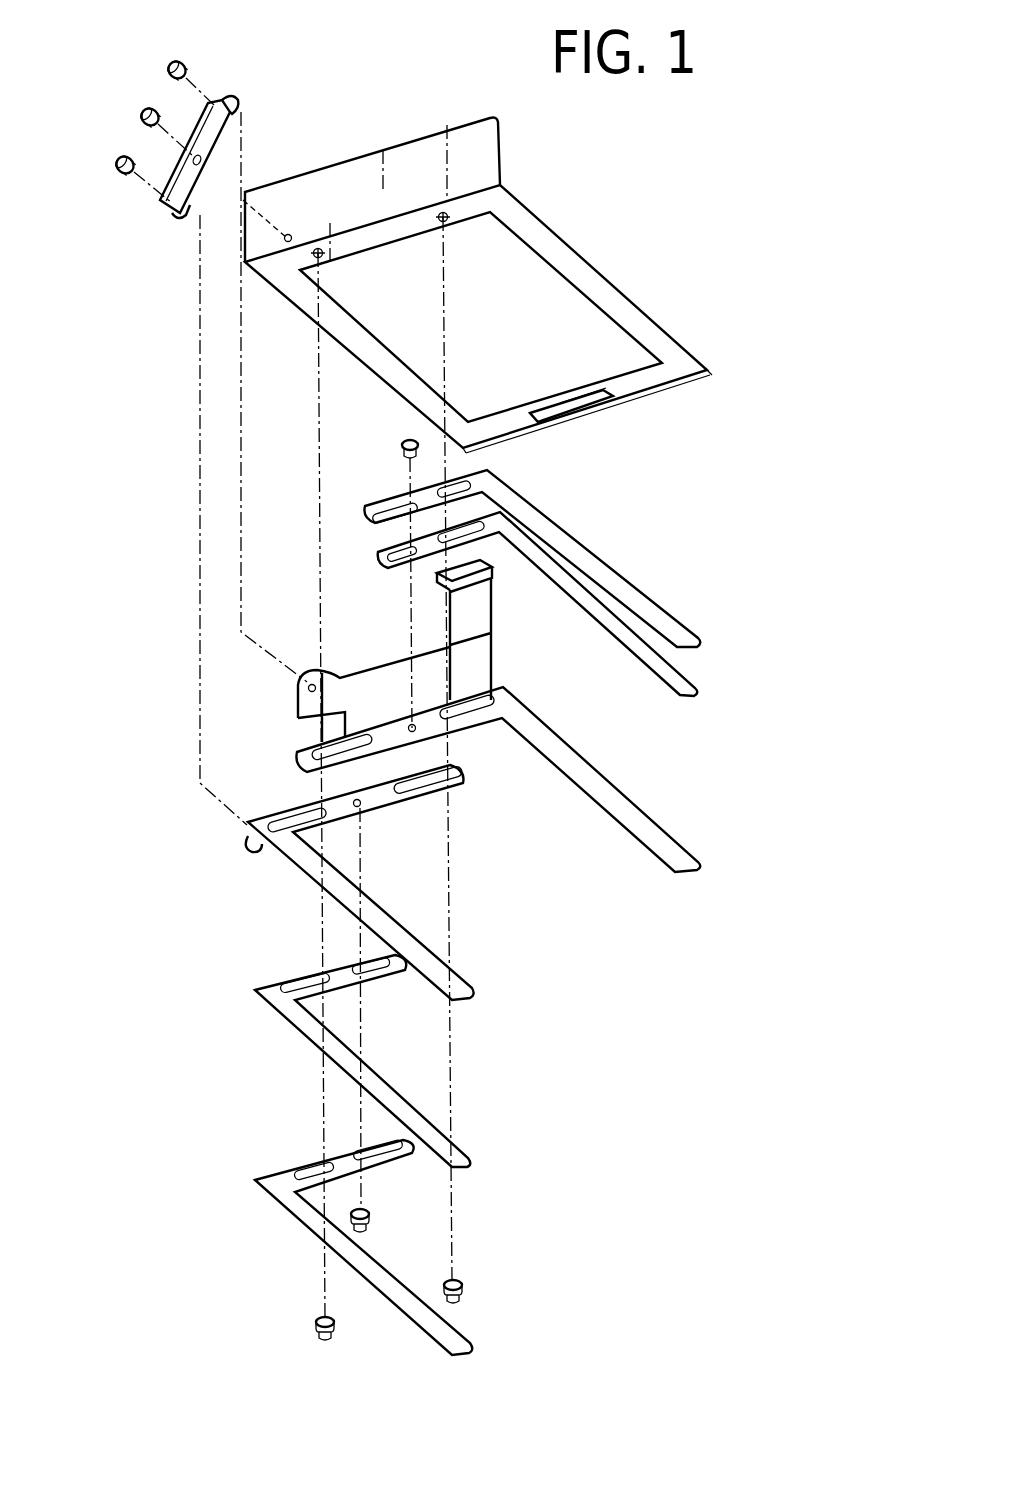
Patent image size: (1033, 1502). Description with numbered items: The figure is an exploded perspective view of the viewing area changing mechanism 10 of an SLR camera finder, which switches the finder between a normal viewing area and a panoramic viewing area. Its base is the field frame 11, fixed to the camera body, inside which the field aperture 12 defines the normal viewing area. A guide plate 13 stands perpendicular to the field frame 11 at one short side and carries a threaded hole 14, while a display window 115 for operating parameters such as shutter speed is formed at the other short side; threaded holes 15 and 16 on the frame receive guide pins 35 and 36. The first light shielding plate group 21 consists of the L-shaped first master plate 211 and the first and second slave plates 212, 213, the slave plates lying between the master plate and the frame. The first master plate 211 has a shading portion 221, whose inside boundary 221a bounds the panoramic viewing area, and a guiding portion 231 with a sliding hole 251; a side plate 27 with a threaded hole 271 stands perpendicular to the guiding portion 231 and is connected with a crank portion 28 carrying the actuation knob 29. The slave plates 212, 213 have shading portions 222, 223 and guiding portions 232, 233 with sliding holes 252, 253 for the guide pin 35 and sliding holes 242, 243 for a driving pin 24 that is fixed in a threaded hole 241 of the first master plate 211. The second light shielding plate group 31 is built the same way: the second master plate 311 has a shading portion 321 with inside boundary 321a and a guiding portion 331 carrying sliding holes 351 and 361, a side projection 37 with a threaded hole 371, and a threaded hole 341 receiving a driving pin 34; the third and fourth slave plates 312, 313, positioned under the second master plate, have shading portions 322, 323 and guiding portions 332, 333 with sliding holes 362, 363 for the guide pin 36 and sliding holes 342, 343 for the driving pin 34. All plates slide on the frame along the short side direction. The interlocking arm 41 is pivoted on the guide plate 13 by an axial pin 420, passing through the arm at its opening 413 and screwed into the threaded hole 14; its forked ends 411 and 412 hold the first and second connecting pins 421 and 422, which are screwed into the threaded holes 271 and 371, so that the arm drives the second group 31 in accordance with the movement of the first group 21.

The viewing area changing mechanism 10 is at (478, 267).
The field frame 11 is at (605, 282).
The field aperture 12 is at (618, 345).
The guide plate 13 is at (450, 143).
The threaded hole 14 is at (292, 235).
The threaded hole 15 is at (448, 222).
The threaded hole 16 is at (325, 257).
The display window 115 is at (590, 408).
The first light shielding plate group 21 is at (525, 674).
The first master plate 211 is at (493, 774).
The first slave plate 212 is at (548, 635).
The second slave plate 213 is at (545, 549).
The shading portion 221 is at (498, 792).
The inside boundary 221a is at (628, 858).
The shading portion 222 is at (700, 690).
The shading portion 223 is at (643, 593).
The guiding portion 231 is at (498, 774).
The guiding portion 232 is at (555, 604).
The guiding portion 233 is at (519, 555).
The threaded hole 241 is at (420, 733).
The sliding hole 242 is at (402, 558).
The sliding hole 243 is at (393, 514).
The sliding hole 251 is at (525, 707).
The sliding hole 252 is at (496, 530).
The sliding hole 253 is at (508, 486).
The driving pin 24 is at (403, 443).
The side plate 27 is at (332, 690).
The threaded hole 271 is at (305, 688).
The crank portion 28 is at (492, 630).
The actuation knob 29 is at (495, 568).
The second light shielding plate group 31 is at (388, 1071).
The second master plate 311 is at (356, 925).
The third slave plate 312 is at (384, 1078).
The fourth slave plate 313 is at (396, 1253).
The shading portion 321 is at (393, 882).
The inside boundary 321a is at (470, 985).
The shading portion 322 is at (300, 1034).
The shading portion 323 is at (402, 1326).
The guiding portion 331 is at (393, 882).
The guiding portion 332 is at (346, 1061).
The guiding portion 333 is at (363, 1259).
The threaded hole 341 is at (362, 808).
The sliding hole 342 is at (372, 968).
The sliding hole 343 is at (378, 1158).
The sliding hole 351 is at (450, 792).
The sliding hole 361 is at (302, 808).
The sliding hole 362 is at (305, 978).
The sliding hole 363 is at (312, 1164).
The driving pin 34 is at (365, 1232).
The guide pin 35 is at (462, 1286).
The guide pin 36 is at (316, 1332).
The side projection 37 is at (215, 862).
The threaded hole 371 is at (260, 850).
The interlocking arm 41 is at (183, 157).
The end of interlocking arm 411 is at (222, 105).
The end of interlocking arm 412 is at (172, 214).
The hole 413 is at (193, 162).
The axial pin 420 is at (143, 110).
The first connecting pin 421 is at (170, 60).
The second connecting pin 422 is at (128, 182).